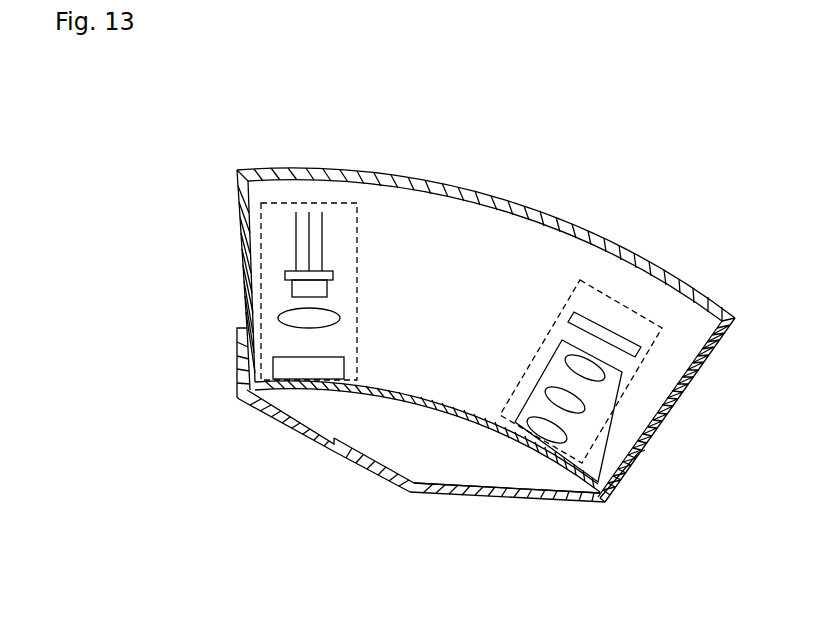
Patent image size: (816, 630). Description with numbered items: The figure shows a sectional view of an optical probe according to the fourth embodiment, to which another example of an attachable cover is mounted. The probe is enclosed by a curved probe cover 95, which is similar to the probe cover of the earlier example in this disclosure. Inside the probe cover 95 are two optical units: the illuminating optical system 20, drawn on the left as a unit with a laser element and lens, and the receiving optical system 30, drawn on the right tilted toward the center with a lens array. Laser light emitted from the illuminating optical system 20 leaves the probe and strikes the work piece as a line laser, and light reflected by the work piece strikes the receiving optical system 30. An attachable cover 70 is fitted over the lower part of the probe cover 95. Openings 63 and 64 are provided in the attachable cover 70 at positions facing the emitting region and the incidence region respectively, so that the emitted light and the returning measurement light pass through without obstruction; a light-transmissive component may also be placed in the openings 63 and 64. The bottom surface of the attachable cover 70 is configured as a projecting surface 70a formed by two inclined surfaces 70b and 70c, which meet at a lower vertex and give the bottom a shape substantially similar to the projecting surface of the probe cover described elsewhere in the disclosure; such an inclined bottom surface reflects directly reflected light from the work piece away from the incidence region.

The illuminating optical system 20 is at (311, 204).
The receiving optical system 30 is at (637, 310).
The opening 63 is at (333, 453).
The opening 64 is at (553, 494).
The attachable cover 70 is at (460, 473).
The projecting surface 70a is at (466, 528).
The inclined surface 70b is at (371, 475).
The inclined surface 70c is at (507, 529).
The probe cover 95 is at (533, 203).